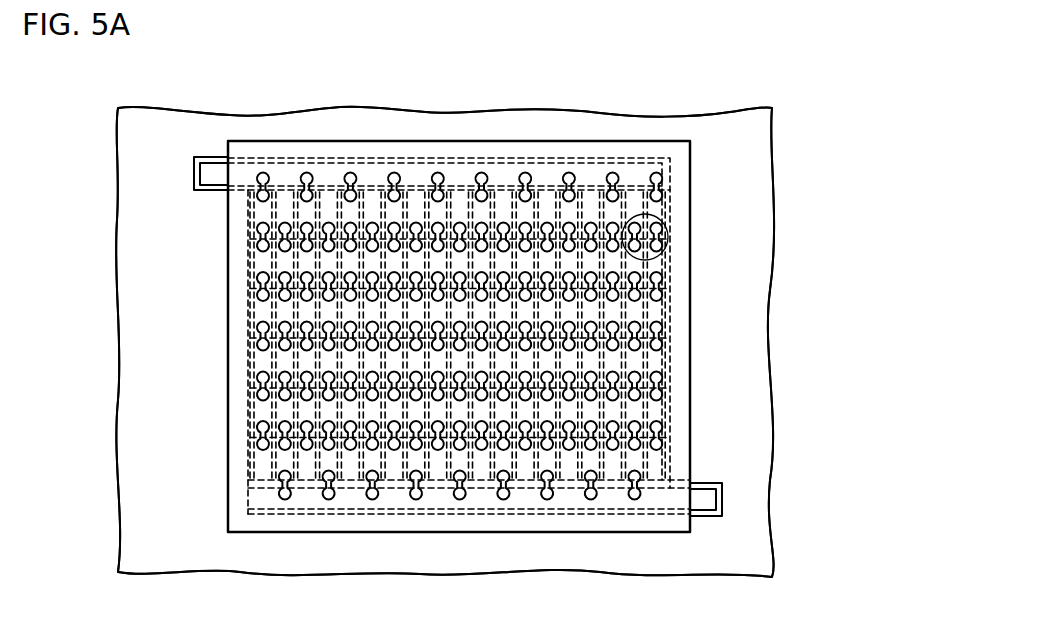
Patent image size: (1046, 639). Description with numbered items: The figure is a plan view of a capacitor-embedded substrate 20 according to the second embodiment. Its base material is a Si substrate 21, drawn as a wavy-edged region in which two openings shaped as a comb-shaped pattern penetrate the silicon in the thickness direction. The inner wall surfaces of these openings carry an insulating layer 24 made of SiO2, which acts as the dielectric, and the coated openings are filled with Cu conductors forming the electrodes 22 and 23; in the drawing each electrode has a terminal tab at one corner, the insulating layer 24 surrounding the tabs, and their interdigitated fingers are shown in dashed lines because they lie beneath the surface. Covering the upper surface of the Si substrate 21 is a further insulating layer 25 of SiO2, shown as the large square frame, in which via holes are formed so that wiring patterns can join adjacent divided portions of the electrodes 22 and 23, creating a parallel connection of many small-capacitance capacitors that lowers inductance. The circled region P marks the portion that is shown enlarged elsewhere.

The capacitor-embedded substrate 20 is at (545, 87).
The Si substrate 21 is at (752, 262).
The electrode 22 is at (210, 175).
The electrode 23 is at (705, 503).
The insulating layer 24 is at (198, 158).
The insulating layer 25 is at (692, 338).
The P portion P is at (663, 212).